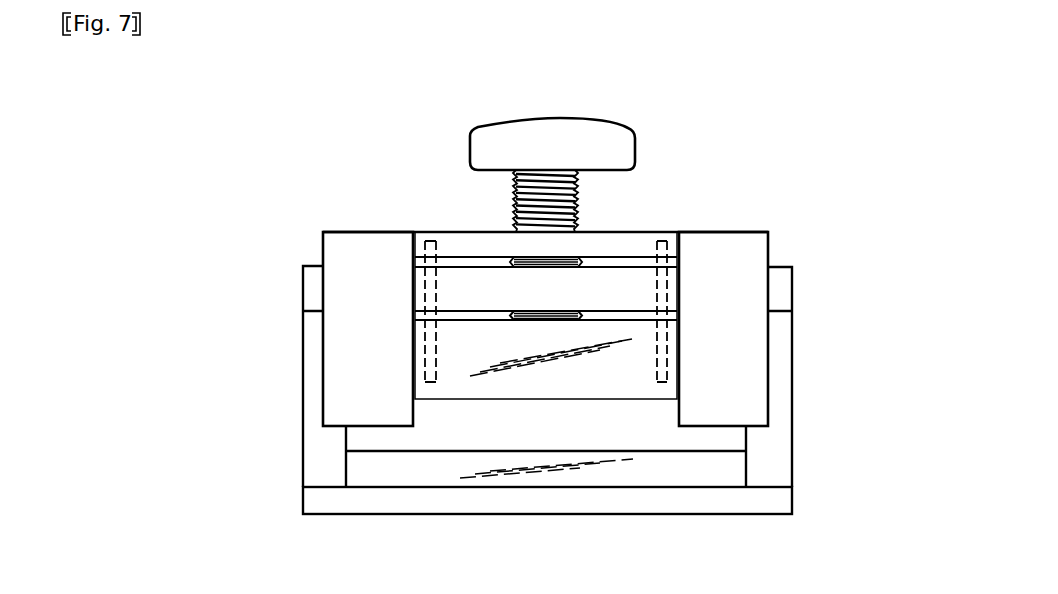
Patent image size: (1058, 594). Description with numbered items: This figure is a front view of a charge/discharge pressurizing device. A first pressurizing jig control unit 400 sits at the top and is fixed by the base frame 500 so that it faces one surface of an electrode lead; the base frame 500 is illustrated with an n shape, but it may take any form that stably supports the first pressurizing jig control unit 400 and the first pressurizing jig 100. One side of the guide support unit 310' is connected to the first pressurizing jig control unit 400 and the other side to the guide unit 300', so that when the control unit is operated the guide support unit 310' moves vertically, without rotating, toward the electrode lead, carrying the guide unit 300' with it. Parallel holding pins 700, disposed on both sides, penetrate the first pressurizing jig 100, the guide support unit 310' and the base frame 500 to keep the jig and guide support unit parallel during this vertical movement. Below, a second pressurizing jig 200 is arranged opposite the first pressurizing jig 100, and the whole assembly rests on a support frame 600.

The first pressurizing jig 100 is at (590, 367).
The second pressurizing jig 200 is at (735, 471).
The guide unit 300' is at (554, 281).
The guide support unit 310' is at (545, 268).
The first pressurizing jig control unit 400 is at (603, 138).
The base frame 500 is at (313, 290).
The support frame 600 is at (732, 498).
The parallel holding pin 700 is at (430, 243).